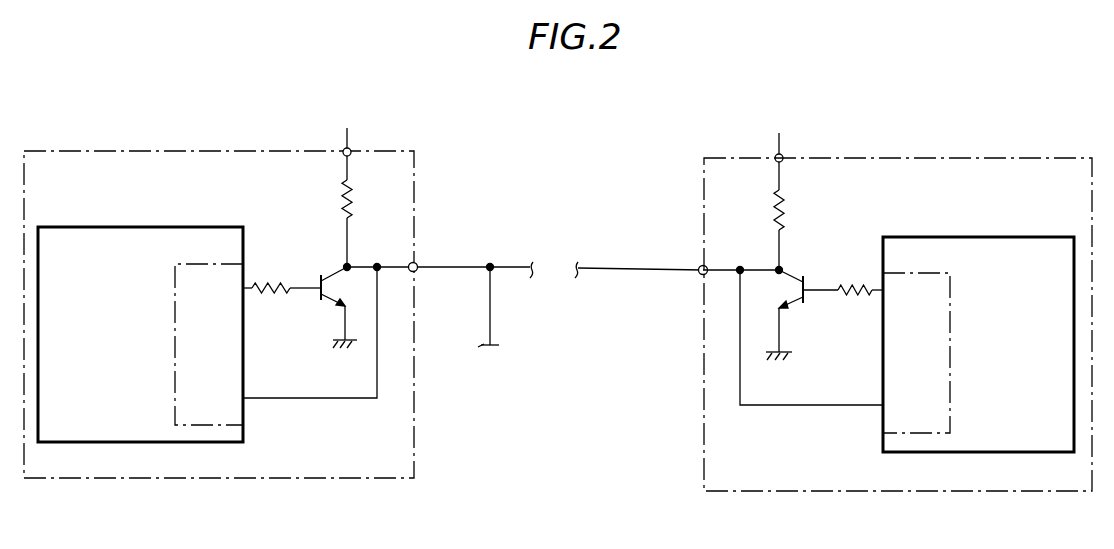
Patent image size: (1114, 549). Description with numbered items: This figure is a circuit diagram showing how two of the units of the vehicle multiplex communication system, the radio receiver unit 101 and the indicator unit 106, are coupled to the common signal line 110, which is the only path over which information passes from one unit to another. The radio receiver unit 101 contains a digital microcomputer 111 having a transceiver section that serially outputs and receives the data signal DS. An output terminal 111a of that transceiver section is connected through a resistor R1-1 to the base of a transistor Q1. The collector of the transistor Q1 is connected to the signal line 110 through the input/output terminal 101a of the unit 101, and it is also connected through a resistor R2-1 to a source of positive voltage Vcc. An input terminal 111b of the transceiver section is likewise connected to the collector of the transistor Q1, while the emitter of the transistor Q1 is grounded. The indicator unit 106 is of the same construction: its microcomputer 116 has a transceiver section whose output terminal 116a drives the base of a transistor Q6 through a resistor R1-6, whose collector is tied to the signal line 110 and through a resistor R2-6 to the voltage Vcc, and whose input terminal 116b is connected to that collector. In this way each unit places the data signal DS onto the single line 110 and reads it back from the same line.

The radio receiver unit 101 is at (229, 150).
The input/output terminal 101a is at (418, 264).
The indicator unit 106 is at (886, 157).
The common signal line 110 is at (592, 265).
The microcomputer 111 is at (157, 226).
The output terminal 111a is at (246, 286).
The input terminal 111b is at (245, 401).
The microcomputer 116 is at (943, 236).
The output terminal 116a is at (881, 288).
The input terminal 116b is at (878, 408).
The transistor Q1 is at (320, 277).
The transistor Q6 is at (796, 278).
The resistor R1-1 is at (272, 293).
The resistor R2-1 is at (356, 196).
The resistor R1-6 is at (851, 294).
The resistor R2-6 is at (787, 206).
The data signal DS is at (686, 262).
The source of positive voltage Vcc is at (560, 134).